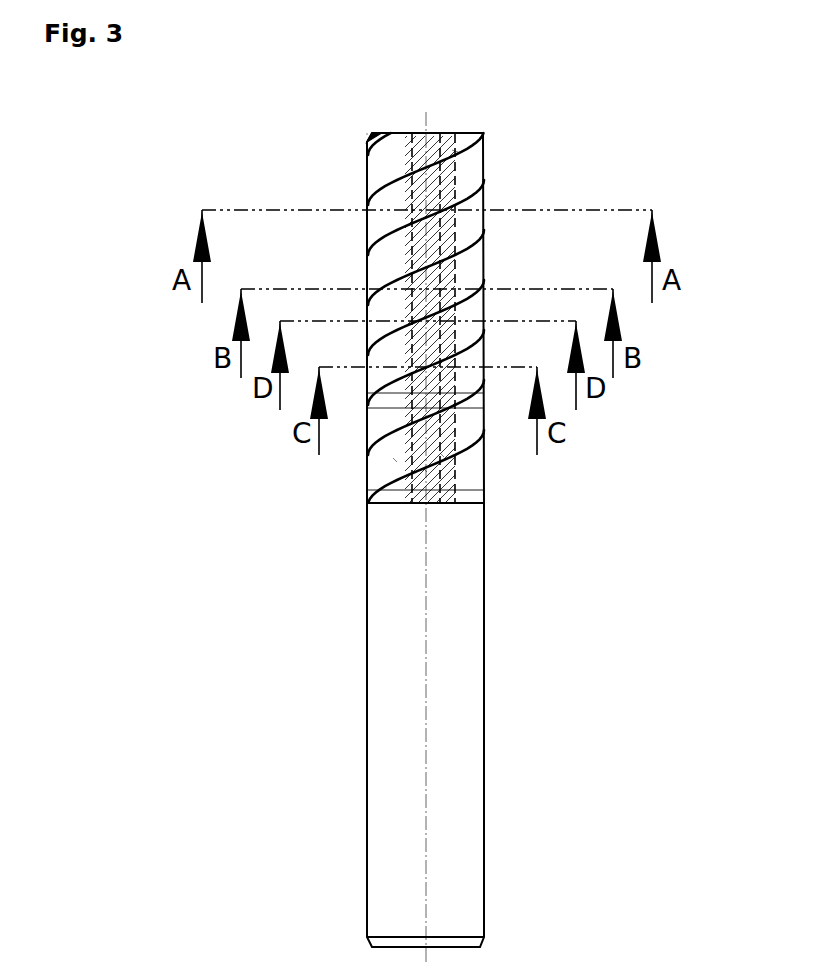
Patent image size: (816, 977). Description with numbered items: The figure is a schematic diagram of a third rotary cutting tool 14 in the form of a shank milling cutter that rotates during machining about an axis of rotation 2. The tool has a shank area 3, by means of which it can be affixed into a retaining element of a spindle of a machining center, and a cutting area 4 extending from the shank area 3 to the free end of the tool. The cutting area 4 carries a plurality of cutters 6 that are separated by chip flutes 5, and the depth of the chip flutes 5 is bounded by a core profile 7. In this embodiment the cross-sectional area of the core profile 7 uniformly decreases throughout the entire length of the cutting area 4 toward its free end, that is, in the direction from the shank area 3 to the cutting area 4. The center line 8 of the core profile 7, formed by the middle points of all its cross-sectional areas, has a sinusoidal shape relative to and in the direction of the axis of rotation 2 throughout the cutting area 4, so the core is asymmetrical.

The axis of rotation 2 is at (425, 470).
The shank area 3 is at (335, 775).
The cutting area 4 is at (342, 157).
The chip flutes 5 is at (455, 150).
The cutters 6 is at (395, 143).
The core profile 7 is at (395, 460).
The center line 8 is at (442, 455).
The third rotary cutting tool 14 is at (148, 590).